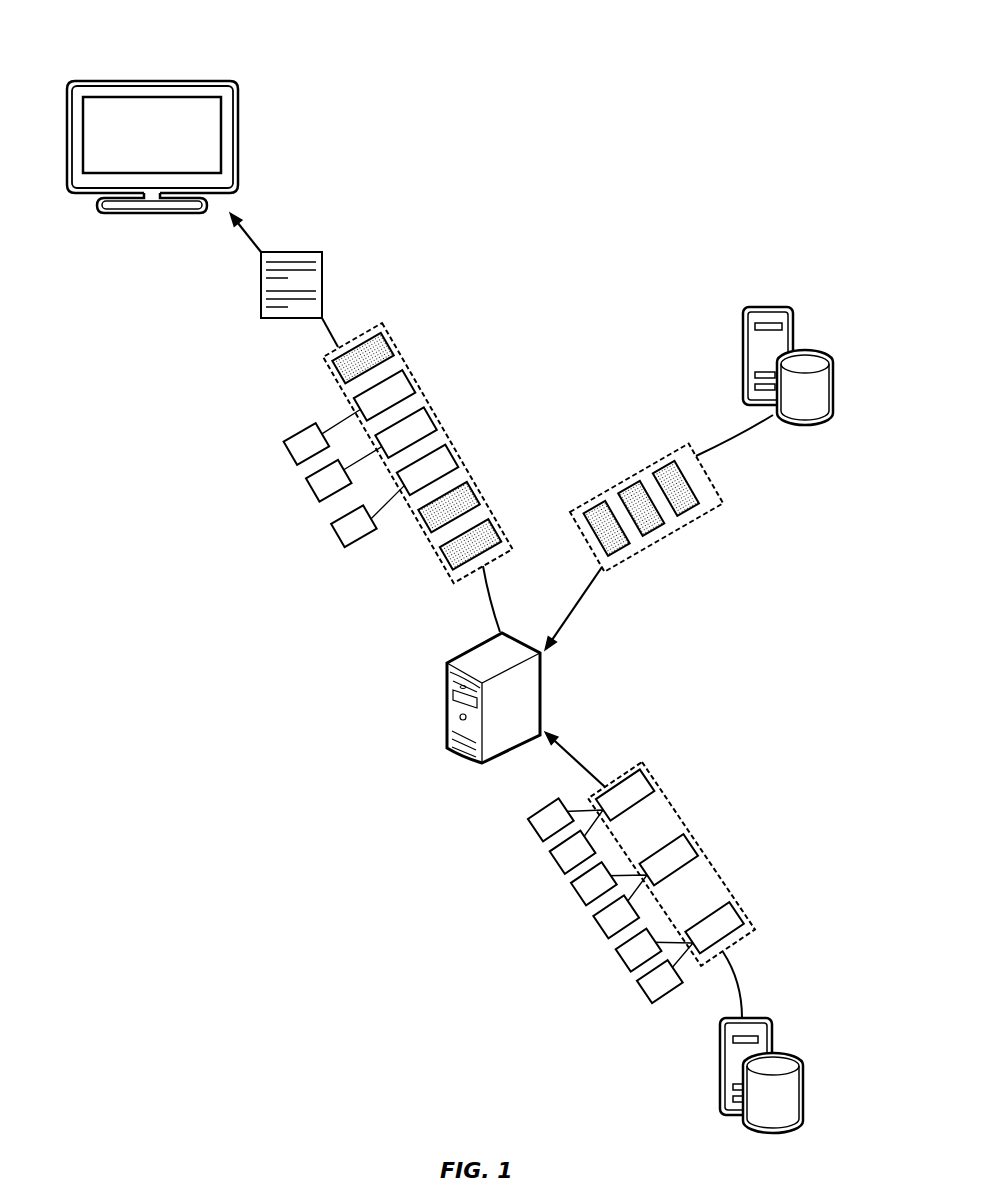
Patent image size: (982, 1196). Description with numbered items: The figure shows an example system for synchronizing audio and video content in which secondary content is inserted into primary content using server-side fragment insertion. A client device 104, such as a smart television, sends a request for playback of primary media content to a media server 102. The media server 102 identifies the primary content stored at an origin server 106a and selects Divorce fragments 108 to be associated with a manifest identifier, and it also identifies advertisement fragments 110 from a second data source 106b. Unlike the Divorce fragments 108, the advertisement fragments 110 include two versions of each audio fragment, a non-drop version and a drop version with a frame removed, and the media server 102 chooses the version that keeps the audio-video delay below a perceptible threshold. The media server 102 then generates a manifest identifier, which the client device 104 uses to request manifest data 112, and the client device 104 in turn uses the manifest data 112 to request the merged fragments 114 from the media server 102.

The media server 102 is at (490, 763).
The client device 104 is at (207, 84).
The origin server 106a is at (800, 349).
The data source 106b is at (792, 1053).
The Divorce fragments 108 is at (688, 443).
The advertisement fragments 110 is at (660, 788).
The manifest data 112 is at (307, 252).
The fragments 114 is at (382, 324).